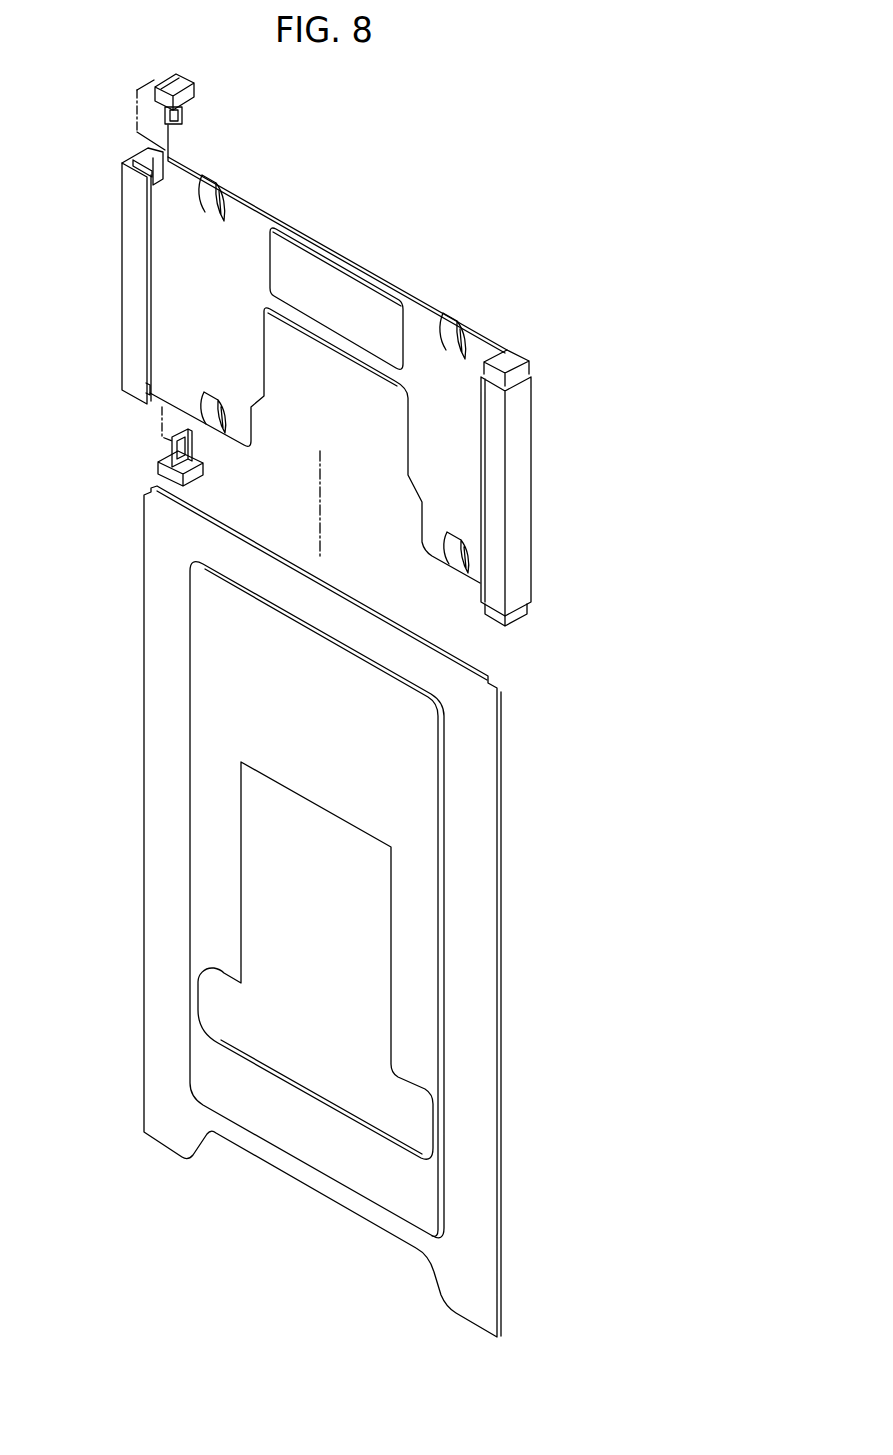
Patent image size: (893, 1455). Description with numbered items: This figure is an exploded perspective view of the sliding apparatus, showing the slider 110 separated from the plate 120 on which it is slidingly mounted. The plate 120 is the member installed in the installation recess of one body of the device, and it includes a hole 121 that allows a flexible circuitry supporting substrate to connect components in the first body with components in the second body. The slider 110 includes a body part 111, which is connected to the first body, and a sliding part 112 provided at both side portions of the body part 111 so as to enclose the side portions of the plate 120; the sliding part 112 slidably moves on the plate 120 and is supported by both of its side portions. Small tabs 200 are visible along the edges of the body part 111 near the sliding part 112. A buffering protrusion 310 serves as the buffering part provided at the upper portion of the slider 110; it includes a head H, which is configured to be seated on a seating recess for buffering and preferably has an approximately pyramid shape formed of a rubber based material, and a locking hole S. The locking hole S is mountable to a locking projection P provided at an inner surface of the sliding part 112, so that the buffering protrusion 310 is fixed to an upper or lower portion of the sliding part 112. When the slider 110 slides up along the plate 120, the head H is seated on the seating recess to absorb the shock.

The slider 110 is at (379, 239).
The body part 111 is at (285, 224).
The sliding part 112 is at (128, 229).
The plate 120 is at (483, 826).
The hole 121 is at (391, 951).
The fixing tab 200 is at (213, 178).
The buffering protrusion 310 is at (190, 77).
The head H is at (196, 91).
The locking hole S is at (183, 113).
The locking projection P is at (128, 160).